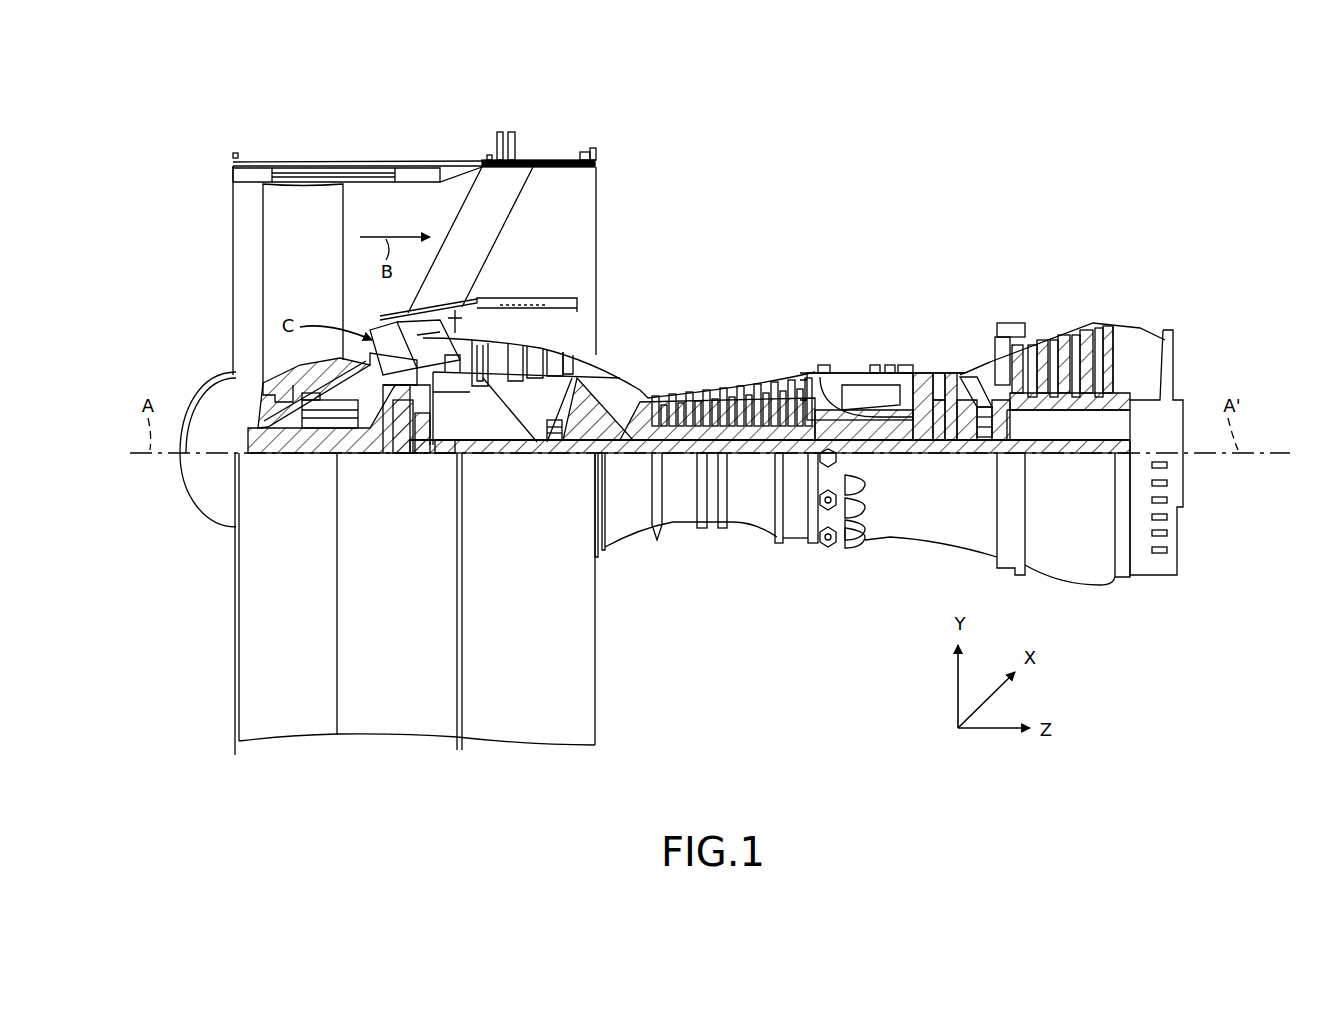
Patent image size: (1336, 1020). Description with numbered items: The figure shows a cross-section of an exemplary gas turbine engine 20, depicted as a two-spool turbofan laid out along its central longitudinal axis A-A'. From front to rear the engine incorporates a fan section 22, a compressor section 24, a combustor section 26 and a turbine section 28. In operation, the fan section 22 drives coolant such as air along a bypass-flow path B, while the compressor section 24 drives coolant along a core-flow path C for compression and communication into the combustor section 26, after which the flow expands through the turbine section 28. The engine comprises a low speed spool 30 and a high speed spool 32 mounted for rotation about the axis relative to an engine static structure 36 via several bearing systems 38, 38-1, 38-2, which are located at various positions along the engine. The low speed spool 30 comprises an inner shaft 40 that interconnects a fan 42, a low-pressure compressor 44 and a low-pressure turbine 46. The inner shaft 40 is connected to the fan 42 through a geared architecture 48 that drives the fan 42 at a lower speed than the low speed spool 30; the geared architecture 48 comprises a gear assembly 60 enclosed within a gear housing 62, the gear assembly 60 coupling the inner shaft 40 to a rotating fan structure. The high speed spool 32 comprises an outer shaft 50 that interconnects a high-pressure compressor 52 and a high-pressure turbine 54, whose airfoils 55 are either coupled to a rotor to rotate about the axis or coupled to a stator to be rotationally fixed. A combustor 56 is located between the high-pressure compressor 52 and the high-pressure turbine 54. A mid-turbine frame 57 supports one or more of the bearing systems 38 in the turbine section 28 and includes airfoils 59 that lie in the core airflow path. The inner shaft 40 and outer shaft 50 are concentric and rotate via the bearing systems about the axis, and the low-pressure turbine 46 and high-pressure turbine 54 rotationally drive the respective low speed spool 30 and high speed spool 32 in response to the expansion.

The gas turbine engine 20 is at (914, 192).
The fan section 22 is at (228, 140).
The compressor section 24 is at (467, 266).
The combustor section 26 is at (815, 266).
The turbine section 28 is at (1120, 266).
The low speed spool 30 is at (757, 460).
The high speed spool 32 is at (793, 428).
The engine static structure 36 is at (395, 720).
The bearing system 38 is at (973, 455).
The bearing system 38-1 is at (312, 440).
The bearing system 38-2 is at (550, 458).
The inner shaft 40 is at (617, 455).
The fan 42 is at (303, 284).
The low-pressure compressor 44 is at (532, 357).
The low-pressure turbine 46 is at (1058, 345).
The geared architecture 48 is at (420, 466).
The outer shaft 50 is at (862, 442).
The high-pressure compressor 52 is at (738, 425).
The high-pressure turbine 54 is at (932, 378).
The airfoils 55 is at (910, 373).
The combustor 56 is at (863, 393).
The mid-turbine frame 57 is at (975, 385).
The airfoils 59 is at (988, 385).
The gear assembly 60 is at (428, 440).
The gear housing 62 is at (430, 408).